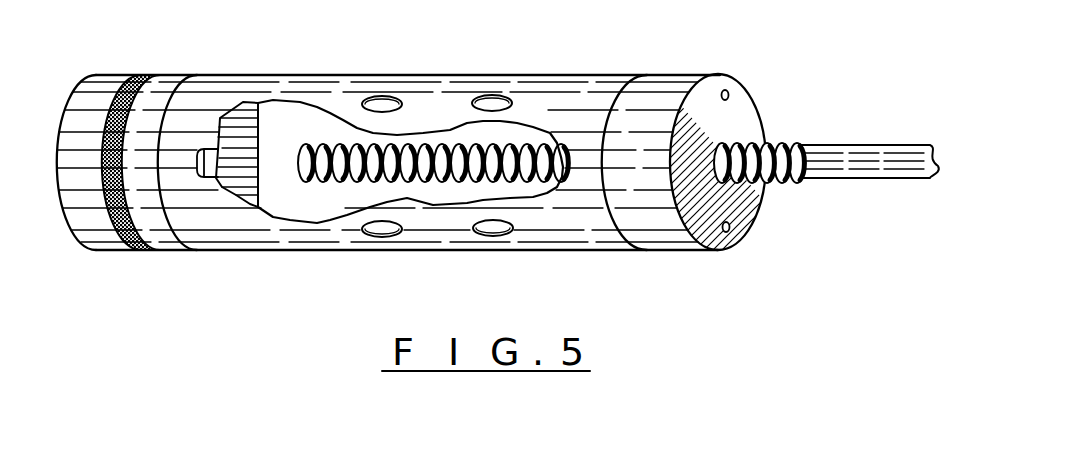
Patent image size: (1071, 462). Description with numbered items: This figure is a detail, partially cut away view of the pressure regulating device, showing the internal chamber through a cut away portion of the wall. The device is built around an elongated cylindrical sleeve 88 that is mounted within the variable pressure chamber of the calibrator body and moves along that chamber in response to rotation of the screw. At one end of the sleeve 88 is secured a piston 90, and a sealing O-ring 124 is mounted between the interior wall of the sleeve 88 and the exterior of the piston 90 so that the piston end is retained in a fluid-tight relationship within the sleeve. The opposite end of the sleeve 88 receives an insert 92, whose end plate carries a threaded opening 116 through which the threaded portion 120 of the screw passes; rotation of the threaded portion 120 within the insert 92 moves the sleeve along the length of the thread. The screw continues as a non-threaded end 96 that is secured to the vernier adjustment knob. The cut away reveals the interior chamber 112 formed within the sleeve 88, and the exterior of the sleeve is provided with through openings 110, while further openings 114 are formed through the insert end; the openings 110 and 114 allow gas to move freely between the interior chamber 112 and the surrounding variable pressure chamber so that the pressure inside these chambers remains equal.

The elongated sleeve 88 is at (549, 218).
The piston 90 is at (100, 250).
The insert 92 is at (663, 228).
The non-threaded end of the screw 96 is at (871, 175).
The through opening 110 is at (381, 100).
The interior chamber 112 is at (380, 161).
The openings 114 is at (730, 92).
The threaded opening 116 is at (730, 142).
The threaded portion 120 is at (427, 140).
The sealing O-ring 124 is at (157, 250).